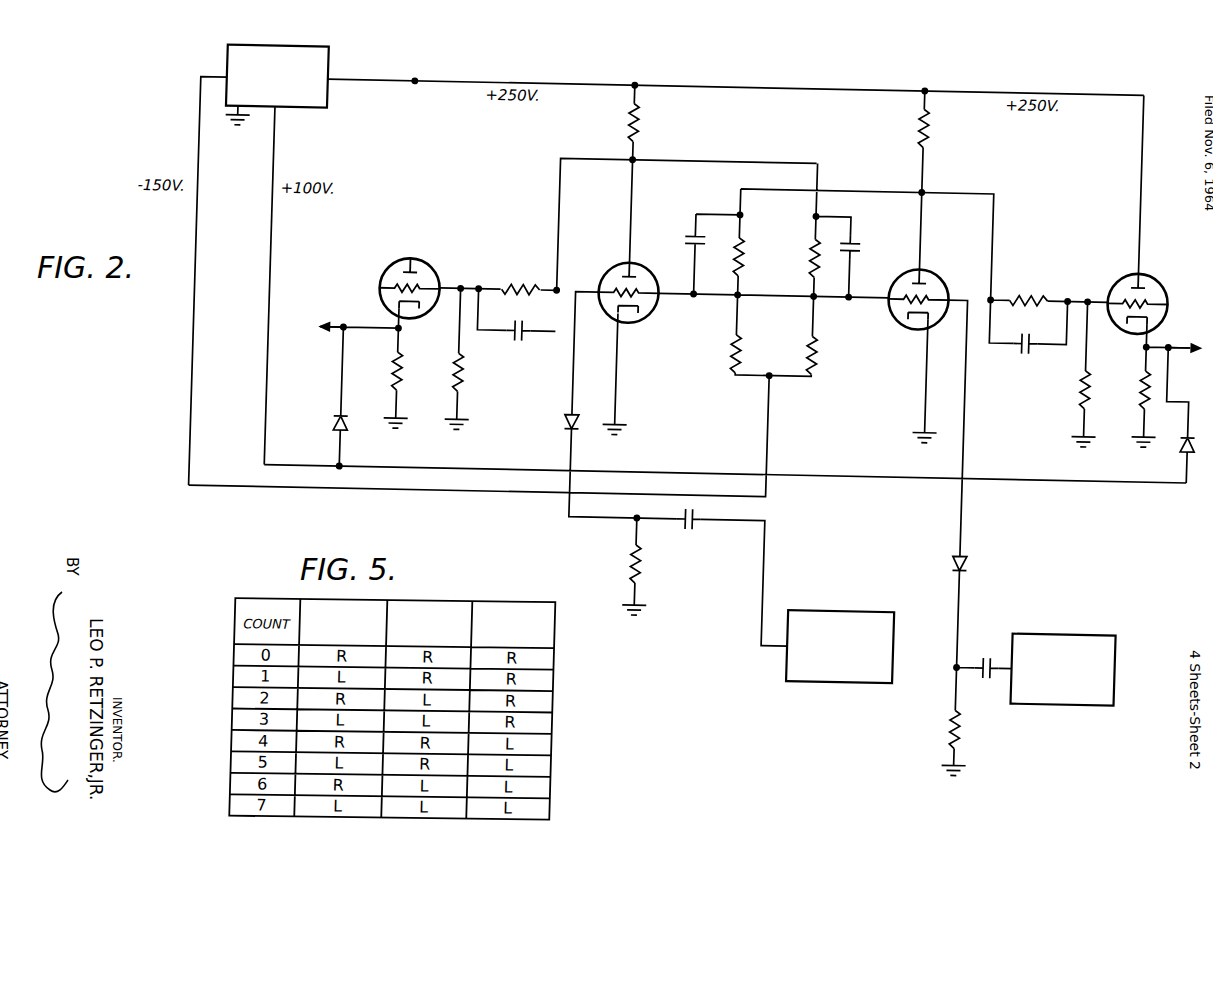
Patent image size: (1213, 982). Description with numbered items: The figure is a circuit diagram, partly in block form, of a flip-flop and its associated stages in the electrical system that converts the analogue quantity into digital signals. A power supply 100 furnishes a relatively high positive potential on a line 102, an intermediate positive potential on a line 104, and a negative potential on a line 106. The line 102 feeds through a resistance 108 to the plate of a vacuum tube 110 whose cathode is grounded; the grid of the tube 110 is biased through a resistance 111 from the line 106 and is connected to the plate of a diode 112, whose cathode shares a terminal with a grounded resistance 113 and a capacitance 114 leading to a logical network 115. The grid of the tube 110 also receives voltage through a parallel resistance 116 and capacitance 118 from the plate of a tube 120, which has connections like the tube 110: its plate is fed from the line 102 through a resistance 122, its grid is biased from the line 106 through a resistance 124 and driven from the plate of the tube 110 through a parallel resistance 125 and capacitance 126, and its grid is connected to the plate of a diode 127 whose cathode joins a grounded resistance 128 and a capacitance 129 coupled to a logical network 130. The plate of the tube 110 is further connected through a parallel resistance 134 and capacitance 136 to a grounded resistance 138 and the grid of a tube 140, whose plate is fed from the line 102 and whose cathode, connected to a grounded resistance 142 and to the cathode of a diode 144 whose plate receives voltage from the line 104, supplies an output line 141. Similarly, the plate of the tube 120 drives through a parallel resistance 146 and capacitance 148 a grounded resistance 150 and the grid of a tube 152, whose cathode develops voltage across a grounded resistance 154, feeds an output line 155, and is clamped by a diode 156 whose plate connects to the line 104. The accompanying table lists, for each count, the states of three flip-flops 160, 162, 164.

In FIG. 2, the power supply 100 is at (332, 51).
In FIG. 2, the line 102 is at (400, 74).
In FIG. 2, the line 104 is at (278, 236).
In FIG. 2, the line 106 is at (203, 292).
In FIG. 2, the resistance 108 is at (642, 104).
In FIG. 2, the vacuum tube 110 is at (615, 258).
In FIG. 2, the resistance 111 is at (741, 336).
In FIG. 2, the diode 112 is at (578, 412).
In FIG. 2, the resistance 113 is at (648, 549).
In FIG. 2, the capacitance 114 is at (712, 508).
In FIG. 2, the logical network 115 is at (850, 666).
In FIG. 2, the resistance 116 is at (751, 238).
In FIG. 2, the capacitance 118 is at (697, 228).
In FIG. 2, the tube 120 is at (948, 260).
In FIG. 2, the resistance 122 is at (933, 112).
In FIG. 2, the resistance 124 is at (827, 318).
In FIG. 2, the resistance 125 is at (817, 257).
In FIG. 2, the capacitance 126 is at (866, 228).
In FIG. 2, the diode 127 is at (984, 543).
In FIG. 2, the resistance 128 is at (970, 712).
In FIG. 2, the capacitance 129 is at (1010, 656).
In FIG. 2, the logical network 130 is at (1088, 684).
In FIG. 2, the resistance 134 is at (526, 274).
In FIG. 2, the capacitance 136 is at (540, 330).
In FIG. 2, the resistance 138 is at (474, 376).
In FIG. 2, the tube 140 is at (440, 260).
In FIG. 2, the output line 141 is at (331, 324).
In FIG. 2, the resistance 142 is at (405, 368).
In FIG. 2, the diode 144 is at (347, 422).
In FIG. 2, the resistance 146 is at (1046, 274).
In FIG. 2, the capacitance 148 is at (1043, 330).
In FIG. 2, the resistance 150 is at (1091, 368).
In FIG. 2, the tube 152 is at (1167, 261).
In FIG. 2, the resistance 154 is at (1152, 374).
In FIG. 2, the output line 155 is at (1192, 322).
In FIG. 2, the diode 156 is at (1196, 426).
In FIG. 5, the flip-flop 160 is at (343, 627).
In FIG. 5, the flip-flop 162 is at (429, 628).
In FIG. 5, the flip-flop 164 is at (513, 629).